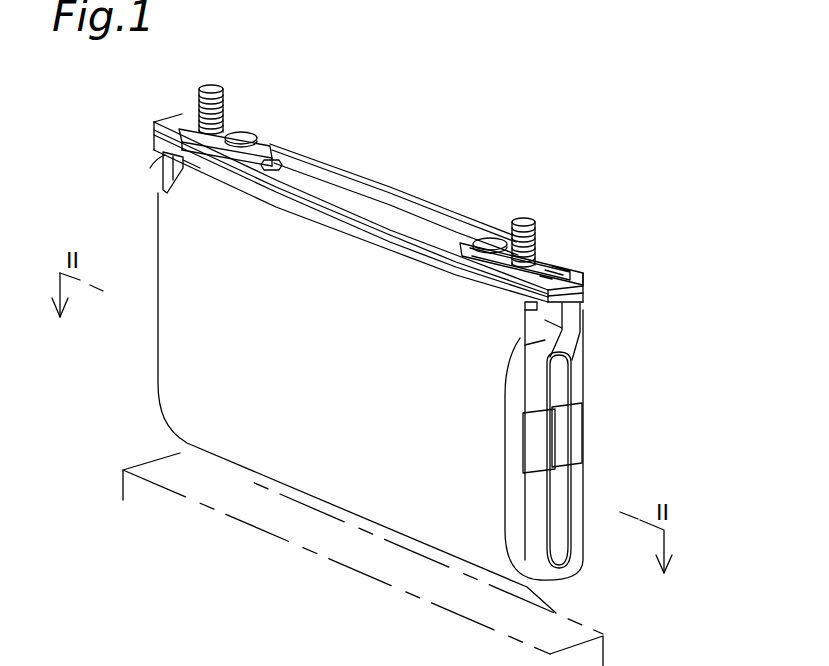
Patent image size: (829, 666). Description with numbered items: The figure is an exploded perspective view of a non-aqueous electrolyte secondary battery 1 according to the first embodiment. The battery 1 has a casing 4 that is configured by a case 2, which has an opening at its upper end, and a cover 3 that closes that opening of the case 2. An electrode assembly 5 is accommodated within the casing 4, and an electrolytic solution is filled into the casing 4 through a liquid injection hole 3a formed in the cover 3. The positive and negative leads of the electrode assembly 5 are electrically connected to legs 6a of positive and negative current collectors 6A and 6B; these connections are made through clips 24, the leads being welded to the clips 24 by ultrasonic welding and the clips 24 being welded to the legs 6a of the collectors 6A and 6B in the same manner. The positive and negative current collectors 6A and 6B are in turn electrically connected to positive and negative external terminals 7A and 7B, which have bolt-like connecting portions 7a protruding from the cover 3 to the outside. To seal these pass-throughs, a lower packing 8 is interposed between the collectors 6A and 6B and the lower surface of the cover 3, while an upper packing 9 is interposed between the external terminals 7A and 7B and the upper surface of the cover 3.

The non-aqueous electrolyte secondary battery 1 is at (647, 198).
The case 2 is at (416, 559).
The casing 4 is at (604, 643).
The cover 3 is at (336, 169).
The liquid injection hole 3a is at (368, 212).
The electrode assembly 5 is at (152, 399).
The positive current collector 6A is at (160, 172).
The negative current collector 6B is at (588, 320).
The legs 6a is at (582, 538).
The positive external terminal 7A is at (365, 165).
The negative external terminal 7B is at (548, 251).
The bolt-like connecting portions 7a is at (199, 93).
The lower packing 8 is at (152, 141).
The upper packing 9 is at (274, 146).
The clips 24 is at (580, 420).